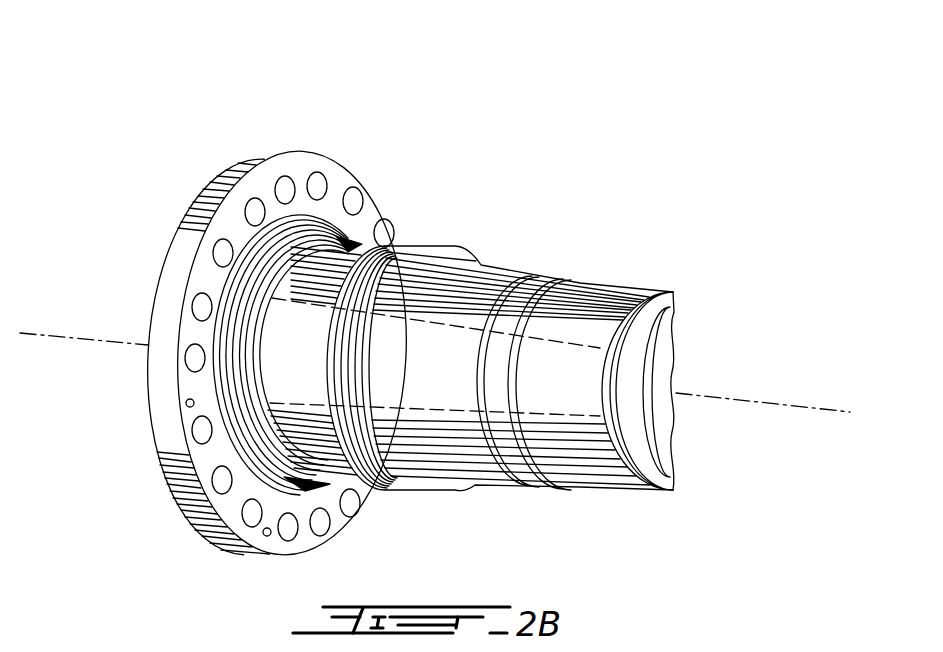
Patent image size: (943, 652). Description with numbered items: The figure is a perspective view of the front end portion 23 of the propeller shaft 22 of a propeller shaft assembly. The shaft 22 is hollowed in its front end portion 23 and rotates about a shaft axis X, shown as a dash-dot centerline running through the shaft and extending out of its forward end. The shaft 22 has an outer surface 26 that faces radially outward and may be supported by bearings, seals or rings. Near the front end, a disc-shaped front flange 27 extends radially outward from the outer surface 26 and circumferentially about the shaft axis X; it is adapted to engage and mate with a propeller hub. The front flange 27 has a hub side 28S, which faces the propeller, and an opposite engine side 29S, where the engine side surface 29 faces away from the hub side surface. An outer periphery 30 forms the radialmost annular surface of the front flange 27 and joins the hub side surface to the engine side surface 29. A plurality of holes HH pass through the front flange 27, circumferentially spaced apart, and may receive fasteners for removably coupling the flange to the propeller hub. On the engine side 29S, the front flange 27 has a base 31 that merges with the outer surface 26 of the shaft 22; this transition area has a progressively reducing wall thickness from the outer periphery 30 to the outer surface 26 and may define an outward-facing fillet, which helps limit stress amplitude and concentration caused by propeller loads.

The propeller shaft 22 is at (748, 159).
The front end portion 23 is at (747, 220).
The outer surface 26 is at (541, 276).
The front flange 27 is at (295, 126).
The hub side 28S is at (199, 183).
The engine side surface 29 is at (298, 167).
The engine side 29S is at (353, 152).
The outer periphery 30 is at (257, 168).
The base 31 is at (328, 488).
The holes HH is at (330, 180).
The shaft axis X is at (70, 335).